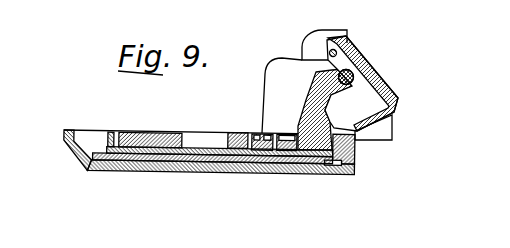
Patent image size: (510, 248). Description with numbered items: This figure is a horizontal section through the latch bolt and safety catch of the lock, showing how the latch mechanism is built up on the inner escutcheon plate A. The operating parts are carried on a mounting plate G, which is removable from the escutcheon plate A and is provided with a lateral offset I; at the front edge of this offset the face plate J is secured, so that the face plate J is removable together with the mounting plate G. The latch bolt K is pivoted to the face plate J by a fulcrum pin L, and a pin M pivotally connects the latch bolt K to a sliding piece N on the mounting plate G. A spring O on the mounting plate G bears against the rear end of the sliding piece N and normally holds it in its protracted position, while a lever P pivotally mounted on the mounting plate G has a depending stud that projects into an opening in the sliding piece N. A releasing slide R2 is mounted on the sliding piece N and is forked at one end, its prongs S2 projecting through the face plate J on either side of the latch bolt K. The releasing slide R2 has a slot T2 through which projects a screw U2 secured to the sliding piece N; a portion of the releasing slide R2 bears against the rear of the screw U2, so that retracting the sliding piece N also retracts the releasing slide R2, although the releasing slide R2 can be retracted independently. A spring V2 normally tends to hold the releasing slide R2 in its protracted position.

The escutcheon plate A is at (66, 151).
The spring O is at (104, 145).
The lever P is at (131, 129).
The spring V2 is at (217, 142).
The releasing slide R2 is at (318, 82).
The screw U2 is at (264, 90).
The face plate J is at (347, 31).
The fulcrum pin L is at (353, 46).
The pin M is at (363, 73).
The latch bolt K is at (377, 82).
The prongs S2 is at (385, 131).
The mounting plate G is at (212, 171).
The sliding piece N is at (247, 171).
The slot T2 is at (281, 150).
The lateral offset I is at (312, 172).